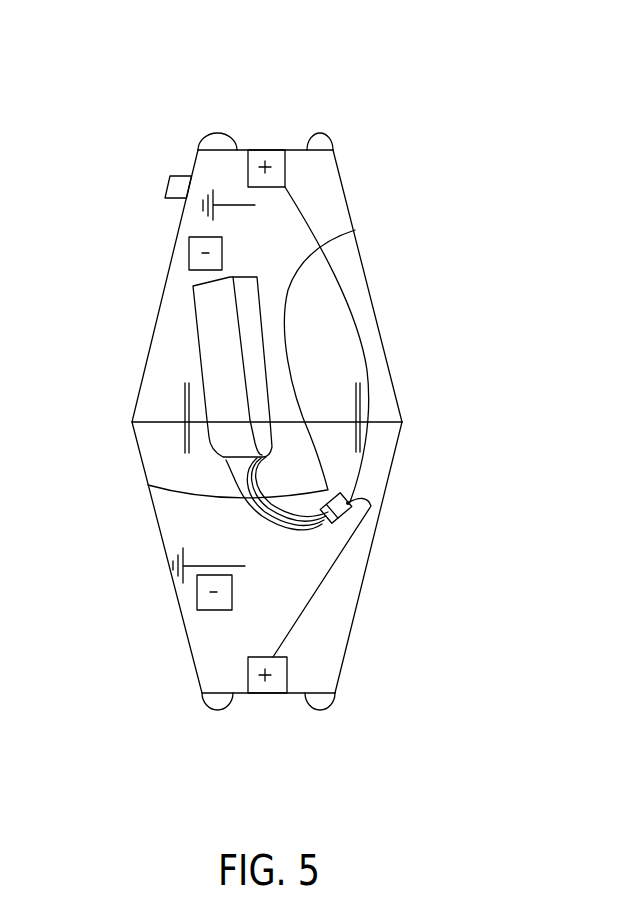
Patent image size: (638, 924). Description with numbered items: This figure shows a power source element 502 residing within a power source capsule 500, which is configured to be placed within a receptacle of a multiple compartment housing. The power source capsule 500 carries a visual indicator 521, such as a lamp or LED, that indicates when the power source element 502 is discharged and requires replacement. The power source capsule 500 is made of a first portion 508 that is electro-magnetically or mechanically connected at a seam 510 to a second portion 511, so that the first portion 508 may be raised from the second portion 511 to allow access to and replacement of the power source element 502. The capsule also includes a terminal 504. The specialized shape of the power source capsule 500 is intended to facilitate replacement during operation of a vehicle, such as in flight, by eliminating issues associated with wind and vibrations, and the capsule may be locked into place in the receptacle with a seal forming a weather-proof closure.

The power source capsule 500 is at (112, 83).
The power source element 502 is at (193, 286).
The positive terminal 504 is at (265, 150).
The first portion 508 is at (360, 250).
The seam 510 is at (422, 421).
The second portion 511 is at (355, 617).
The visual indicator 521 is at (182, 174).